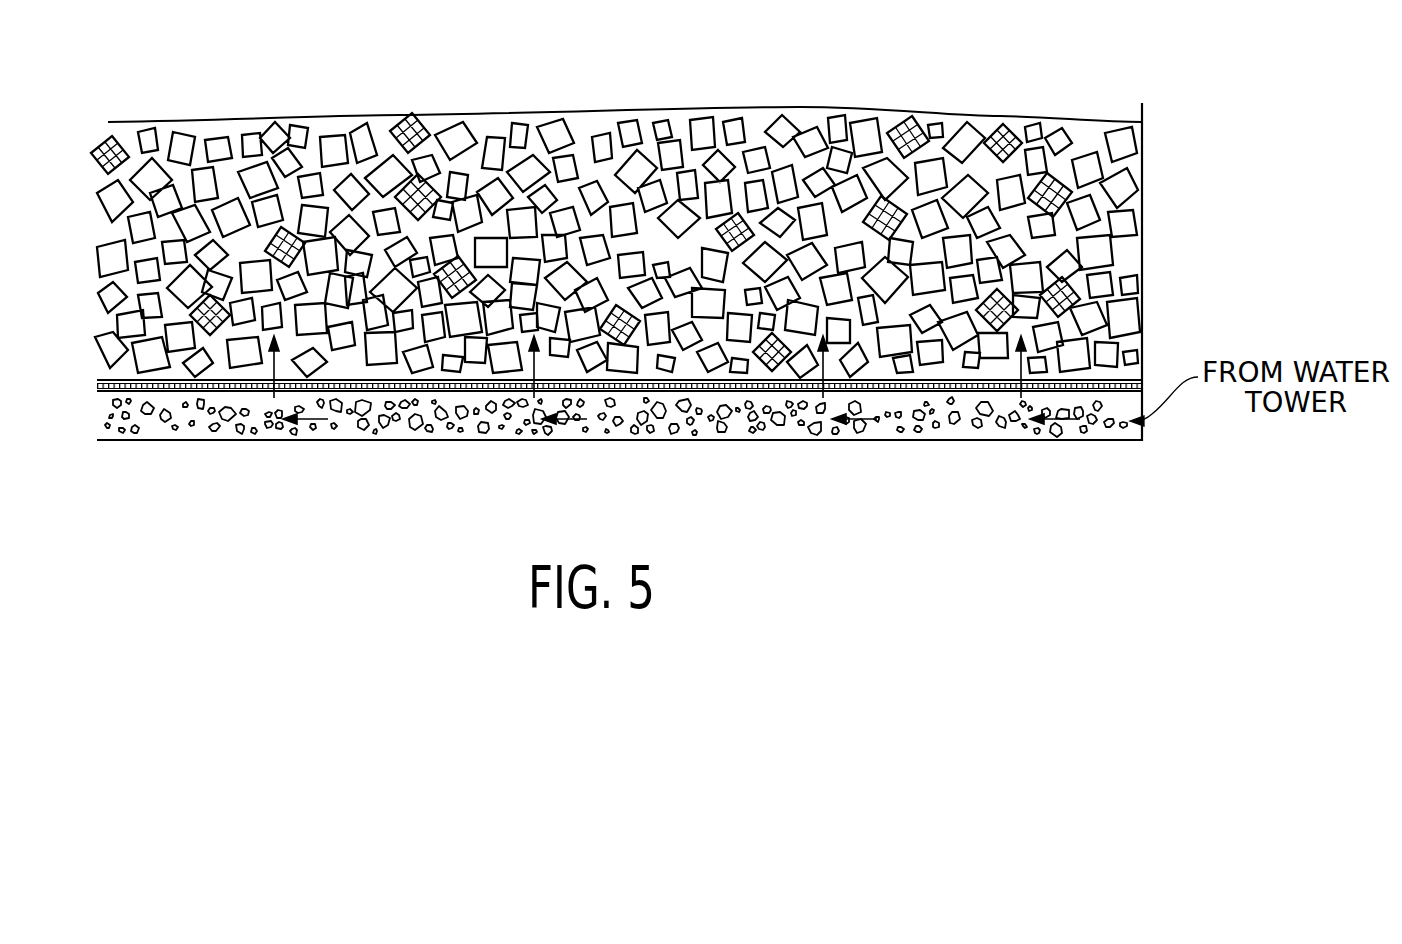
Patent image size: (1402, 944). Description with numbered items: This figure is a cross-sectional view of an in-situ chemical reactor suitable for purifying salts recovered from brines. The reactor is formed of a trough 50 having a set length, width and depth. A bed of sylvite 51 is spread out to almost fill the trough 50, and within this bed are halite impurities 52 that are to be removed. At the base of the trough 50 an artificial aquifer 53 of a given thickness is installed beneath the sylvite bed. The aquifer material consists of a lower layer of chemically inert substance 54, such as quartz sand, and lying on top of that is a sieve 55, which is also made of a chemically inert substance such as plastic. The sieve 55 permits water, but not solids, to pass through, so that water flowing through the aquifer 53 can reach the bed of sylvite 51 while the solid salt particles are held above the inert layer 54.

The trough 50 is at (1130, 260).
The bed of sylvite 51 is at (440, 138).
The halite impurities 52 is at (898, 138).
The artificial aquifer 53 is at (762, 410).
The chemically inert substance 54 is at (427, 440).
The sieve 55 is at (995, 398).